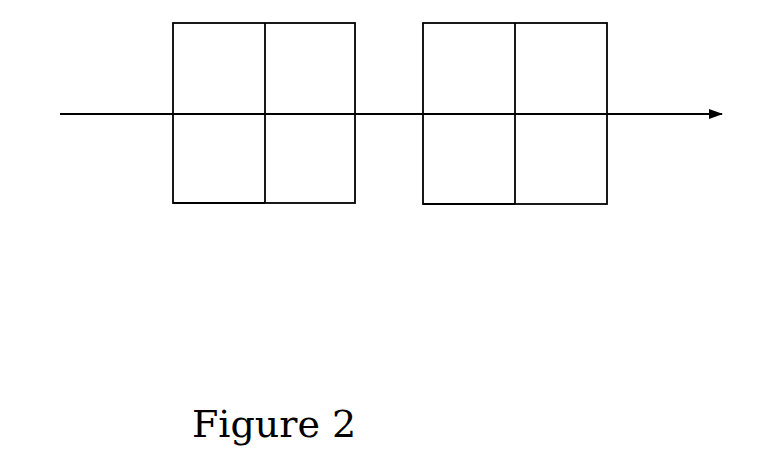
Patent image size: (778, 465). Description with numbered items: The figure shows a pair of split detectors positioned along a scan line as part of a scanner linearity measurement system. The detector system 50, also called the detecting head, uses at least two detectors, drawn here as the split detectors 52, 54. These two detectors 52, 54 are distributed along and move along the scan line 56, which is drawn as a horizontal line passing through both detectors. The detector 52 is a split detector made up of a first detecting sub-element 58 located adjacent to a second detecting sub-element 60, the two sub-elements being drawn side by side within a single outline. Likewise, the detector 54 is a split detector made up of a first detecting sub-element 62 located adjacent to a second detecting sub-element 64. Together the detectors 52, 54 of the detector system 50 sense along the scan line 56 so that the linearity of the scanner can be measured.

The detector system 50 is at (495, 240).
The split detector 52 is at (150, 10).
The split detector 54 is at (633, 75).
The scan line 56 is at (125, 115).
The first detecting sub-element 58 is at (219, 172).
The second detecting sub-element 60 is at (293, 113).
The first detecting sub-element 62 is at (469, 173).
The second detecting sub-element 64 is at (543, 113).